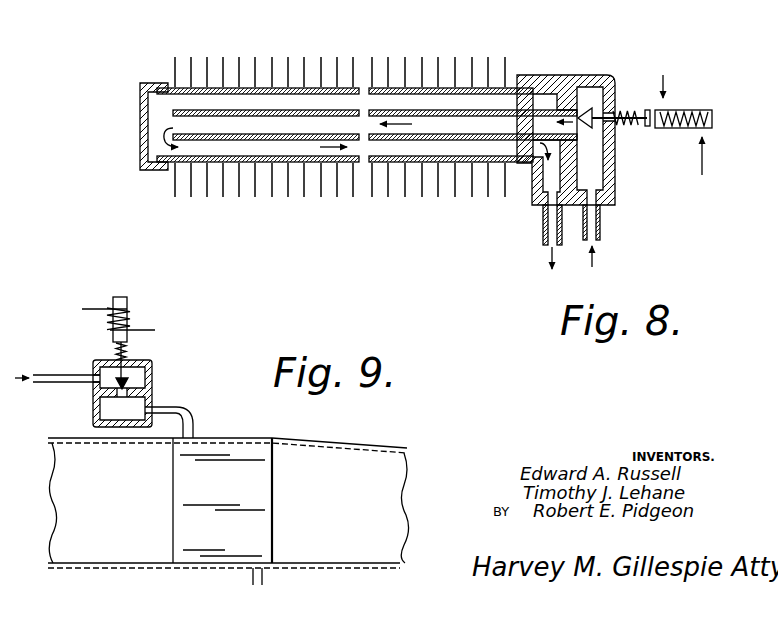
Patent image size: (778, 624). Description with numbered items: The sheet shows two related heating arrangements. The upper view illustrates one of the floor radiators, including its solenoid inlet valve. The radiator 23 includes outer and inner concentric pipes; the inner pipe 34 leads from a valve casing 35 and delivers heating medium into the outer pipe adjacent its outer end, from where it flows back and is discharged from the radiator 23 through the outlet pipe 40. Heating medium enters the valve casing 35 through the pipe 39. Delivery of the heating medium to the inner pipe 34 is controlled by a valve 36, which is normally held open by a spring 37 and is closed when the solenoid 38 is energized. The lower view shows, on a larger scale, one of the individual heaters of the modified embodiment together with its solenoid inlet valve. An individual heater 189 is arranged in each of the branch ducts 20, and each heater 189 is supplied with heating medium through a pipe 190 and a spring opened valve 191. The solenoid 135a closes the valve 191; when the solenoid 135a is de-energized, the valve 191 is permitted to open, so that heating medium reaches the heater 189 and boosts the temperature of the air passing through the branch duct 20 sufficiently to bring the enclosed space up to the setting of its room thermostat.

In FIG. 8, the radiator 23 is at (323, 89).
In FIG. 8, the inner pipe 34 is at (422, 110).
In FIG. 8, the valve casing 35 is at (592, 75).
In FIG. 8, the valve 36 is at (595, 110).
In FIG. 8, the spring 37 is at (624, 130).
In FIG. 8, the solenoid 38 is at (677, 108).
In FIG. 8, the pipe 39 is at (600, 227).
In FIG. 8, the outlet pipe 40 is at (543, 236).
In FIG. 9, the solenoid 135a is at (130, 313).
In FIG. 9, the spring opened valve 191 is at (152, 362).
In FIG. 9, the pipe 190 is at (178, 405).
In FIG. 9, the individual heater 189 is at (227, 450).
In FIG. 9, the branch duct 20 is at (347, 443).